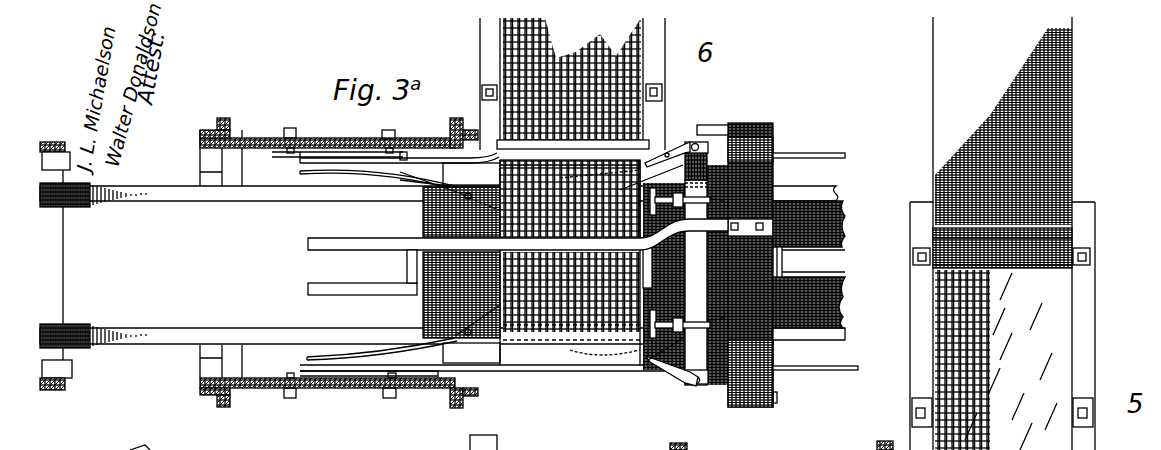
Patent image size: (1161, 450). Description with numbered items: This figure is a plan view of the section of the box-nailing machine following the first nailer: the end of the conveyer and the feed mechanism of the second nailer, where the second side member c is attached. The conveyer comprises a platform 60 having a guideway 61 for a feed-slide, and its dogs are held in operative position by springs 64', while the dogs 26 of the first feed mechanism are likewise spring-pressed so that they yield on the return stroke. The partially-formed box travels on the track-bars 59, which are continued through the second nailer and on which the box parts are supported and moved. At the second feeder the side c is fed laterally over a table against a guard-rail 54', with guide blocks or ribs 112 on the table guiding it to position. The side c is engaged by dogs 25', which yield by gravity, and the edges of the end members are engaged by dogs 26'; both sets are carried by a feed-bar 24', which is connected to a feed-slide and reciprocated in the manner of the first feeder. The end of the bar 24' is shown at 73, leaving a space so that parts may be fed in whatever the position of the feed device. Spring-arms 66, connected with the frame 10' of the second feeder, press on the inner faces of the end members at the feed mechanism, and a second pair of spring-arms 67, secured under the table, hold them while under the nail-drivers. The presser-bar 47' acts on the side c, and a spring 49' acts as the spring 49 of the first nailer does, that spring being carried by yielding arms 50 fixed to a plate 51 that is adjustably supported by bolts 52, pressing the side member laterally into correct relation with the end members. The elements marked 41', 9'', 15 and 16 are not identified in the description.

The track-bars 59 is at (285, 188).
The spring 49' is at (399, 134).
The spring-arms 67 is at (358, 172).
The slide block 41' is at (465, 255).
The second side member C is at (572, 191).
The guard-rail 54' is at (482, 387).
The feed-bar 24' is at (715, 282).
The guide blocks or ribs 112 is at (645, 262).
The frame of the second feeder 10' is at (773, 272).
The end of the bar 24' 73 is at (750, 150).
The presser-bar 47' is at (518, 254).
The platform 60 is at (833, 237).
The guideway 61 is at (833, 267).
The dogs 26' is at (672, 254).
The spring-arms 66 is at (622, 183).
The dogs 25' is at (655, 263).
The shaft 9'' is at (663, 438).
The yielding arms 50 is at (785, 443).
The bolts 52 is at (791, 436).
The spring 49 is at (871, 437).
The plate 51 is at (788, 443).
The springs 64' is at (190, 442).
The upright frame 15 is at (1073, 365).
The base 16 is at (1150, 440).
The dogs 26 is at (1120, 443).